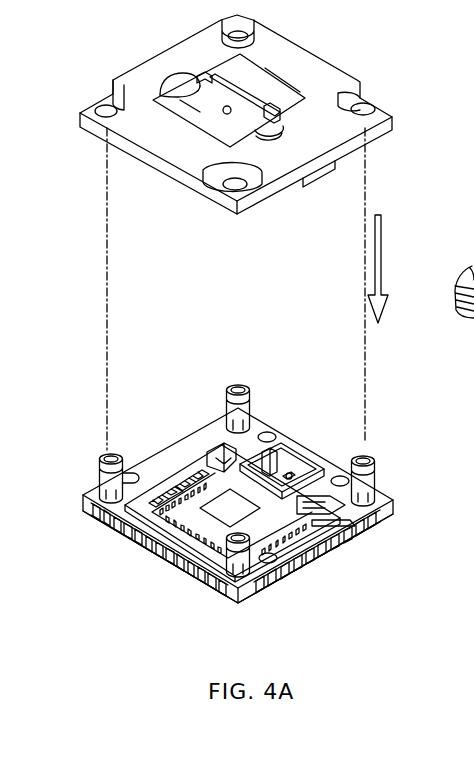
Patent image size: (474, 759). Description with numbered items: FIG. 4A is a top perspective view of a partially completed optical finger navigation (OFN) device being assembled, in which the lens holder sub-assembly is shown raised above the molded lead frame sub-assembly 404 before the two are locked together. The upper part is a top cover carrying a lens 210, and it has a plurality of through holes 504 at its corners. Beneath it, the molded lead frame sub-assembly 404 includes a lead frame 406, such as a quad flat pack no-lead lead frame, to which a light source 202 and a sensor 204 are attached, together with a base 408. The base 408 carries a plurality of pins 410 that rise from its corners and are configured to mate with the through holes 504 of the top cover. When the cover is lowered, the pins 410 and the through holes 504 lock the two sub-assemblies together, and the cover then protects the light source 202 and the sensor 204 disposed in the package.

The lens 210 is at (113, 82).
The through holes 504 is at (108, 108).
The molded lead frame sub-assembly 404 is at (147, 576).
The lead frame 406 is at (338, 551).
The sensor 204 is at (223, 487).
The light source 202 is at (284, 472).
The pins 410 is at (242, 385).
The base 408 is at (394, 497).